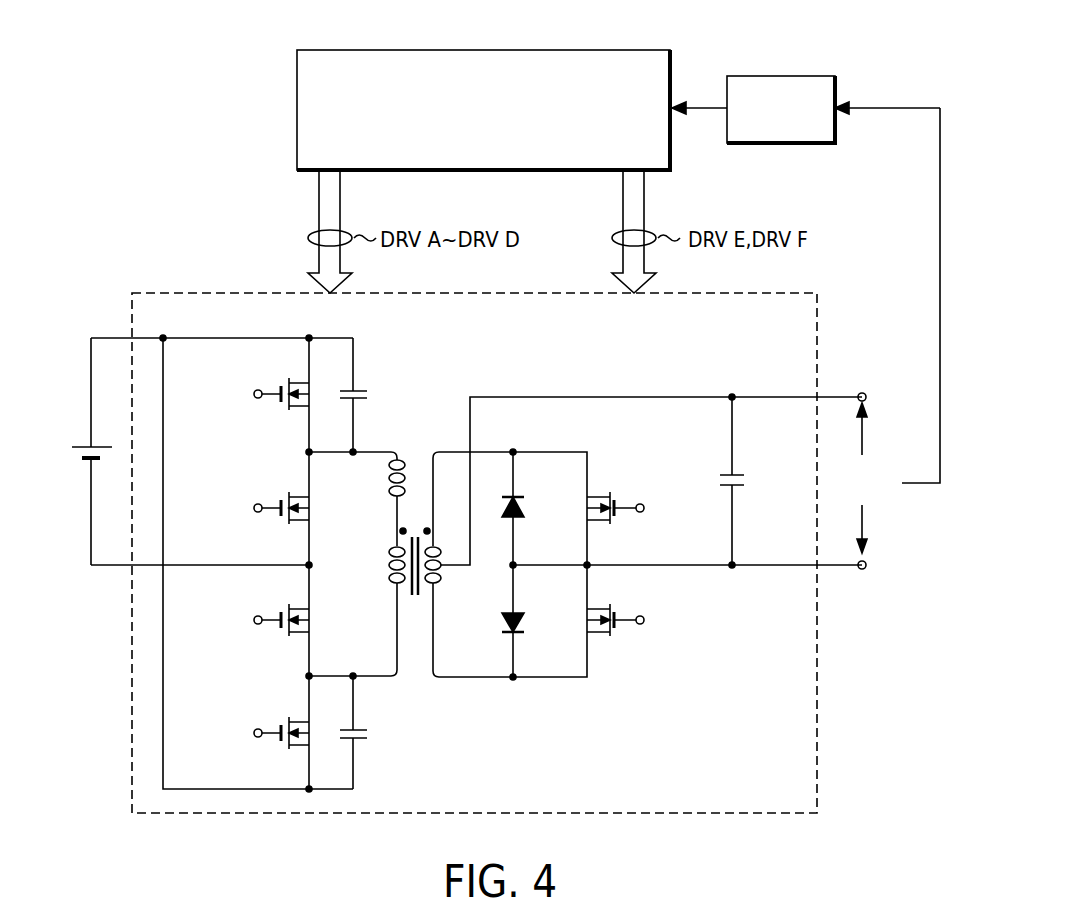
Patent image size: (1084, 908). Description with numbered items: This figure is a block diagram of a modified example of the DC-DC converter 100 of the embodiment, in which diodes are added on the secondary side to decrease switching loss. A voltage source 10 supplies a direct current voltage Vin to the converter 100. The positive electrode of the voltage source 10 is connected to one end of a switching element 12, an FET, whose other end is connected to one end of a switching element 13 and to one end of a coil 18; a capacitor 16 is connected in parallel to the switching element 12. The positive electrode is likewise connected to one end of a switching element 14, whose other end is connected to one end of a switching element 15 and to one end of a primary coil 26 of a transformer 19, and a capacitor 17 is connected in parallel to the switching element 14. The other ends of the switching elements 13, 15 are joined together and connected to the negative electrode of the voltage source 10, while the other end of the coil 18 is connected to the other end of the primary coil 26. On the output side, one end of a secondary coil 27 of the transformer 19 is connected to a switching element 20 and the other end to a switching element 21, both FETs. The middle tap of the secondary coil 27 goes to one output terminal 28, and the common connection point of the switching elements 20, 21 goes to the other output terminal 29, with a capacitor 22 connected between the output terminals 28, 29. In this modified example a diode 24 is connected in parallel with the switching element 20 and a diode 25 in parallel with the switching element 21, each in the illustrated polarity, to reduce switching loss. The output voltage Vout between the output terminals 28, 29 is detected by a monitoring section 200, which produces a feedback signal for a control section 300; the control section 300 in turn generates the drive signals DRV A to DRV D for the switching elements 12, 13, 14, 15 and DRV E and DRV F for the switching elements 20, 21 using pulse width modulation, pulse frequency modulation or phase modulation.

The control section 300 is at (483, 50).
The monitoring section 200 is at (776, 76).
The DC-DC converter 100 is at (819, 758).
The voltage source 10 is at (72, 460).
The switching element 12 is at (312, 394).
The switching element 13 is at (322, 508).
The switching element 14 is at (312, 740).
The switching element 15 is at (322, 620).
The capacitor 16 is at (370, 394).
The capacitor 17 is at (375, 733).
The coil 18 is at (408, 470).
The transformer 19 is at (413, 598).
The switching element 20 is at (600, 491).
The switching element 21 is at (600, 640).
The capacitor 22 is at (750, 480).
The diode 24 is at (525, 505).
The diode 25 is at (525, 625).
The primary coil 26 is at (382, 565).
The secondary coil 27 is at (440, 585).
The output terminal 28 is at (868, 397).
The output terminal 29 is at (868, 565).